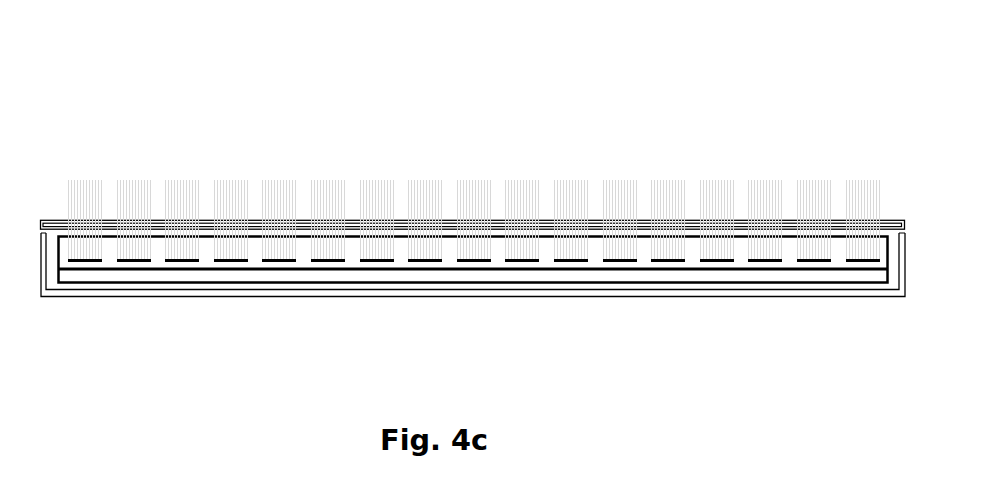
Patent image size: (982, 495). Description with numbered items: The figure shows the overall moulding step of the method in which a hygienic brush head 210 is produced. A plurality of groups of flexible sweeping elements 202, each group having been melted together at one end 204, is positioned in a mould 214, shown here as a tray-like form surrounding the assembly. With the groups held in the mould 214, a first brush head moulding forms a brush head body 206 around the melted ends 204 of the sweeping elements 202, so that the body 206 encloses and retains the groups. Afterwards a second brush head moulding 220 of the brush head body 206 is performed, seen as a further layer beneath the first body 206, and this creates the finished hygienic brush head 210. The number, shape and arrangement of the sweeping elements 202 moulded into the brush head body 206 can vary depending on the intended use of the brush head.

The hygienic brush head 210 is at (623, 132).
The sweeping elements 202 is at (225, 180).
The melted end 204 is at (237, 262).
The brush head body 206 is at (697, 263).
The second brush head moulding 220 is at (472, 275).
The mould 214 is at (798, 298).